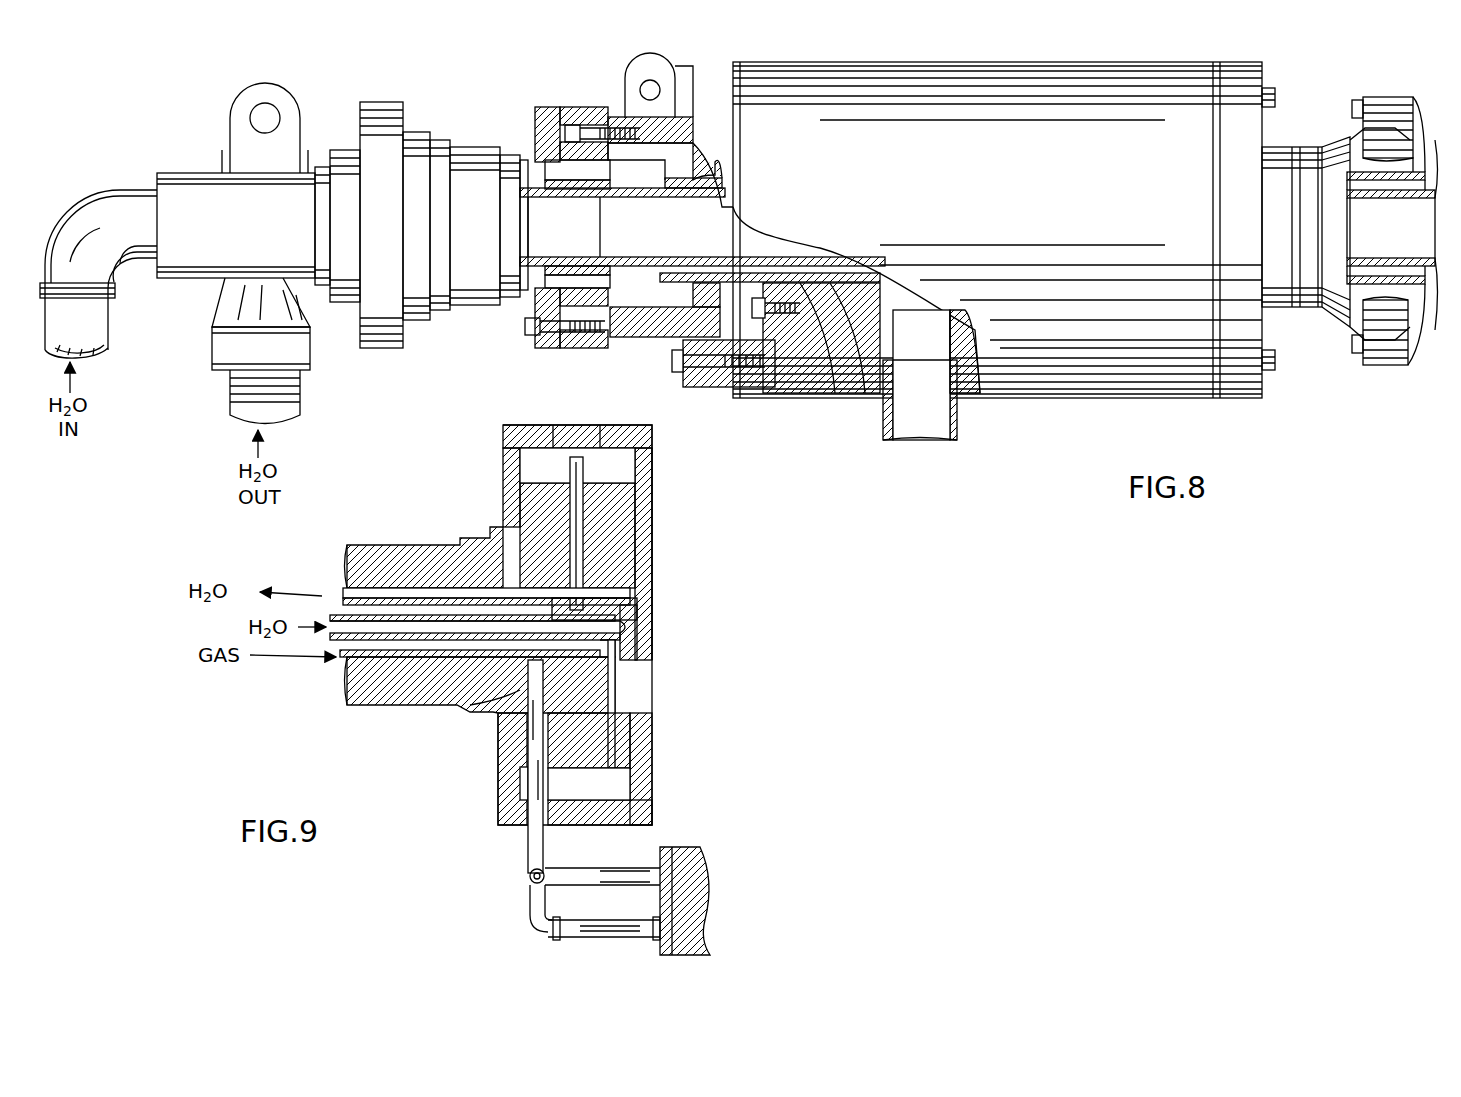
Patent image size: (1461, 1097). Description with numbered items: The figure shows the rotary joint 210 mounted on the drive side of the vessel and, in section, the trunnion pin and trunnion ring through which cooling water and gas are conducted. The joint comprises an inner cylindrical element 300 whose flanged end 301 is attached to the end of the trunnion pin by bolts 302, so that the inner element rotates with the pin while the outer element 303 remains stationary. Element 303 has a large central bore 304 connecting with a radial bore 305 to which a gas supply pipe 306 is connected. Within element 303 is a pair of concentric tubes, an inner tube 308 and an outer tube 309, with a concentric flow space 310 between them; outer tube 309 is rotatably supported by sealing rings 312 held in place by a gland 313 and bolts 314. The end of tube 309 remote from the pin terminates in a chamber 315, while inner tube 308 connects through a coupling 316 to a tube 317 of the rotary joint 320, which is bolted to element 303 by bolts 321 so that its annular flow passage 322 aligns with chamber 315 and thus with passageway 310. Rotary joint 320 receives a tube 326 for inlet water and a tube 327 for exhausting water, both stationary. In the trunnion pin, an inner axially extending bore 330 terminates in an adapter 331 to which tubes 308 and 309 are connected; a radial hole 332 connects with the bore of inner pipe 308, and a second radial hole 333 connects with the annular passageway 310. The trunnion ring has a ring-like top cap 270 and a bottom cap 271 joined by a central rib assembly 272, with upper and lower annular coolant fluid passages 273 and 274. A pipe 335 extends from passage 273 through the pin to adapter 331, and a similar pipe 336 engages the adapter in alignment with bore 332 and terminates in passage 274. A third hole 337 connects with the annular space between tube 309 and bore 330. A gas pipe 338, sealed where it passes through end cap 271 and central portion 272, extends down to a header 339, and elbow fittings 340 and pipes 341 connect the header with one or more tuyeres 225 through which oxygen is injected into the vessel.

In FIG. 8, the rotary joint 320 is at (222, 100).
In FIG. 8, the annular flow passage 322 is at (525, 165).
In FIG. 8, the tube 317 is at (540, 165).
In FIG. 8, the coupling 316 is at (582, 118).
In FIG. 8, the chamber 315 is at (655, 160).
In FIG. 8, the rotary joint 210 is at (958, 54).
In FIG. 8, the outer element 303 is at (1128, 66).
In FIG. 8, the inner cylindrical element 300 is at (1300, 147).
In FIG. 8, the flanged end 301 is at (1372, 97).
In FIG. 8, the bolts 302 is at (1350, 137).
In FIG. 8, the outer tube 309 is at (1425, 172).
In FIG. 8, the concentric flow space 310 is at (690, 290).
In FIG. 9, the concentric flow space 310 is at (342, 675).
In FIG. 8, the inner tube 308 is at (1425, 270).
In FIG. 8, the bolts 321 is at (525, 328).
In FIG. 8, the bolts 314 is at (680, 335).
In FIG. 8, the sealing rings 312 is at (845, 380).
In FIG. 8, the gland 313 is at (795, 400).
In FIG. 8, the central bore 304 is at (873, 398).
In FIG. 8, the gas supply pipe 306 is at (918, 435).
In FIG. 8, the radial bore 305 is at (960, 335).
In FIG. 8, the tube 326 is at (120, 355).
In FIG. 8, the tube 327 is at (238, 412).
In FIG. 9, the top cap 270 is at (635, 428).
In FIG. 9, the upper annular coolant fluid passage 273 is at (530, 450).
In FIG. 9, the central rib assembly 272 is at (655, 492).
In FIG. 9, the pipe 335 is at (585, 522).
In FIG. 9, the inner axially extending bore 330 is at (347, 585).
In FIG. 9, the second radial hole 333 is at (652, 587).
In FIG. 9, the adapter 331 is at (640, 626).
In FIG. 9, the radial hole 332 is at (640, 648).
In FIG. 9, the third hole 337 is at (470, 712).
In FIG. 9, the pipe 336 is at (650, 708).
In FIG. 9, the bottom cap 271 is at (655, 815).
In FIG. 9, the lower annular coolant fluid passage 274 is at (640, 787).
In FIG. 9, the pipe 338 is at (530, 785).
In FIG. 9, the header 339 is at (528, 873).
In FIG. 9, the elbow fittings 340 is at (535, 918).
In FIG. 9, the pipes 341 is at (588, 935).
In FIG. 9, the tuyeres 225 is at (702, 910).